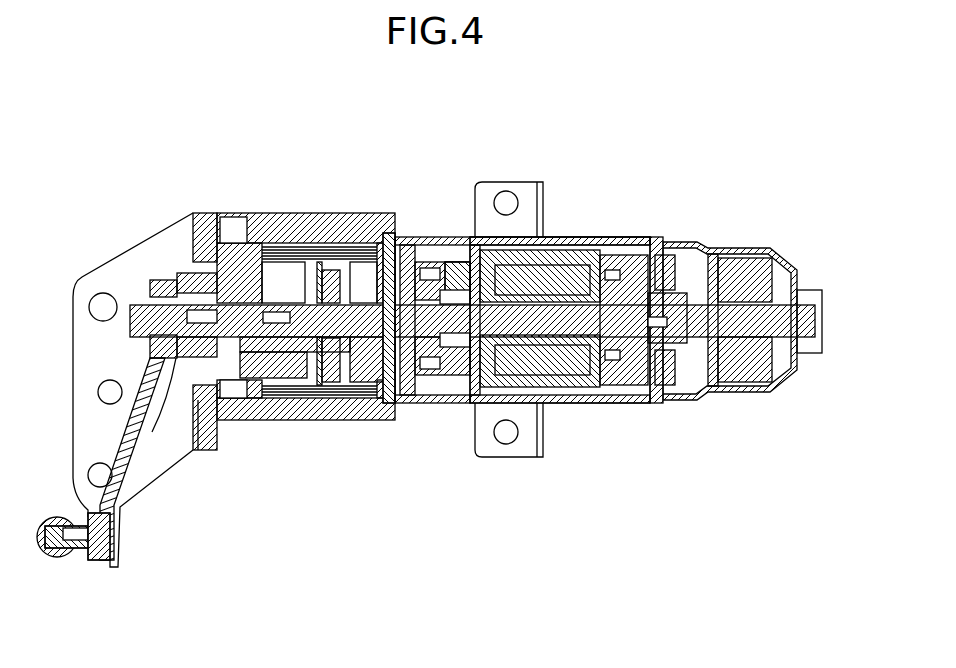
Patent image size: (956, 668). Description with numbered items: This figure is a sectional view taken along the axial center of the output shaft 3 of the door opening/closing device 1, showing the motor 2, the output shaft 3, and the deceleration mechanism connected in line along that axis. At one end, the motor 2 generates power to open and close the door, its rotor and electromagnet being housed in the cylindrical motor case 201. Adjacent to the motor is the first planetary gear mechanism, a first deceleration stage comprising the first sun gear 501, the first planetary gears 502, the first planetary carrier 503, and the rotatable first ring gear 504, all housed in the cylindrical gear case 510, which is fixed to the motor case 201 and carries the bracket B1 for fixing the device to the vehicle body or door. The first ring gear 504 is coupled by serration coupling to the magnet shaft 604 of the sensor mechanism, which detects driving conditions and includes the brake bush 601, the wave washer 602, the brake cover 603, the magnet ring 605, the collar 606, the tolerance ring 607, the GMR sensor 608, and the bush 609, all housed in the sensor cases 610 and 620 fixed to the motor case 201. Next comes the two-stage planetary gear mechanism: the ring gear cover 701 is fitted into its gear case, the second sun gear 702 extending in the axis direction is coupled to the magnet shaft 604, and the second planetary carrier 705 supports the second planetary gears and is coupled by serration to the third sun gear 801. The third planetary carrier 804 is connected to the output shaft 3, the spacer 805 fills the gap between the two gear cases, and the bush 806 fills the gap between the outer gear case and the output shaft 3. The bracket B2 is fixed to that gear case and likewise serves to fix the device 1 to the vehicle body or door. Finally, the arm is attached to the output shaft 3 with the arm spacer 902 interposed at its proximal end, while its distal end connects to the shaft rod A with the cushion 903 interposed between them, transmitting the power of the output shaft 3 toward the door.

The door opening/closing device 1 is at (743, 186).
The motor 2 is at (792, 255).
The output shaft 3 is at (212, 215).
The motor case 201 is at (785, 392).
The first sun gear 501 is at (612, 395).
The first planetary gears 502 is at (580, 250).
The first planetary carrier 503 is at (550, 385).
The first ring gear 504 is at (521, 392).
The gear case 510 is at (633, 405).
The brake bush 601 is at (472, 395).
The wave washer 602 is at (495, 240).
The brake cover 603 is at (477, 262).
The magnet shaft 604 is at (452, 262).
The magnet ring 605 is at (398, 395).
The collar 606 is at (437, 262).
The tolerance ring 607 is at (439, 387).
The giant magneto resistance effect (GMR) sensor 608 is at (406, 250).
The bush 609 is at (387, 235).
The sensor case 610 is at (466, 395).
The sensor case 620 is at (421, 392).
The ring gear cover 701 is at (367, 233).
The second sun gear 702 is at (353, 395).
The second planetary carrier 705 is at (333, 378).
The third sun gear 801 is at (290, 380).
The third planetary carrier 804 is at (242, 392).
The spacer 805 is at (255, 225).
The bush 806 is at (177, 250).
The arm spacer 902 is at (167, 287).
The cushion 903 is at (80, 552).
The shaft rod A is at (102, 553).
The bracket B1 is at (508, 180).
The bracket B2 is at (82, 277).